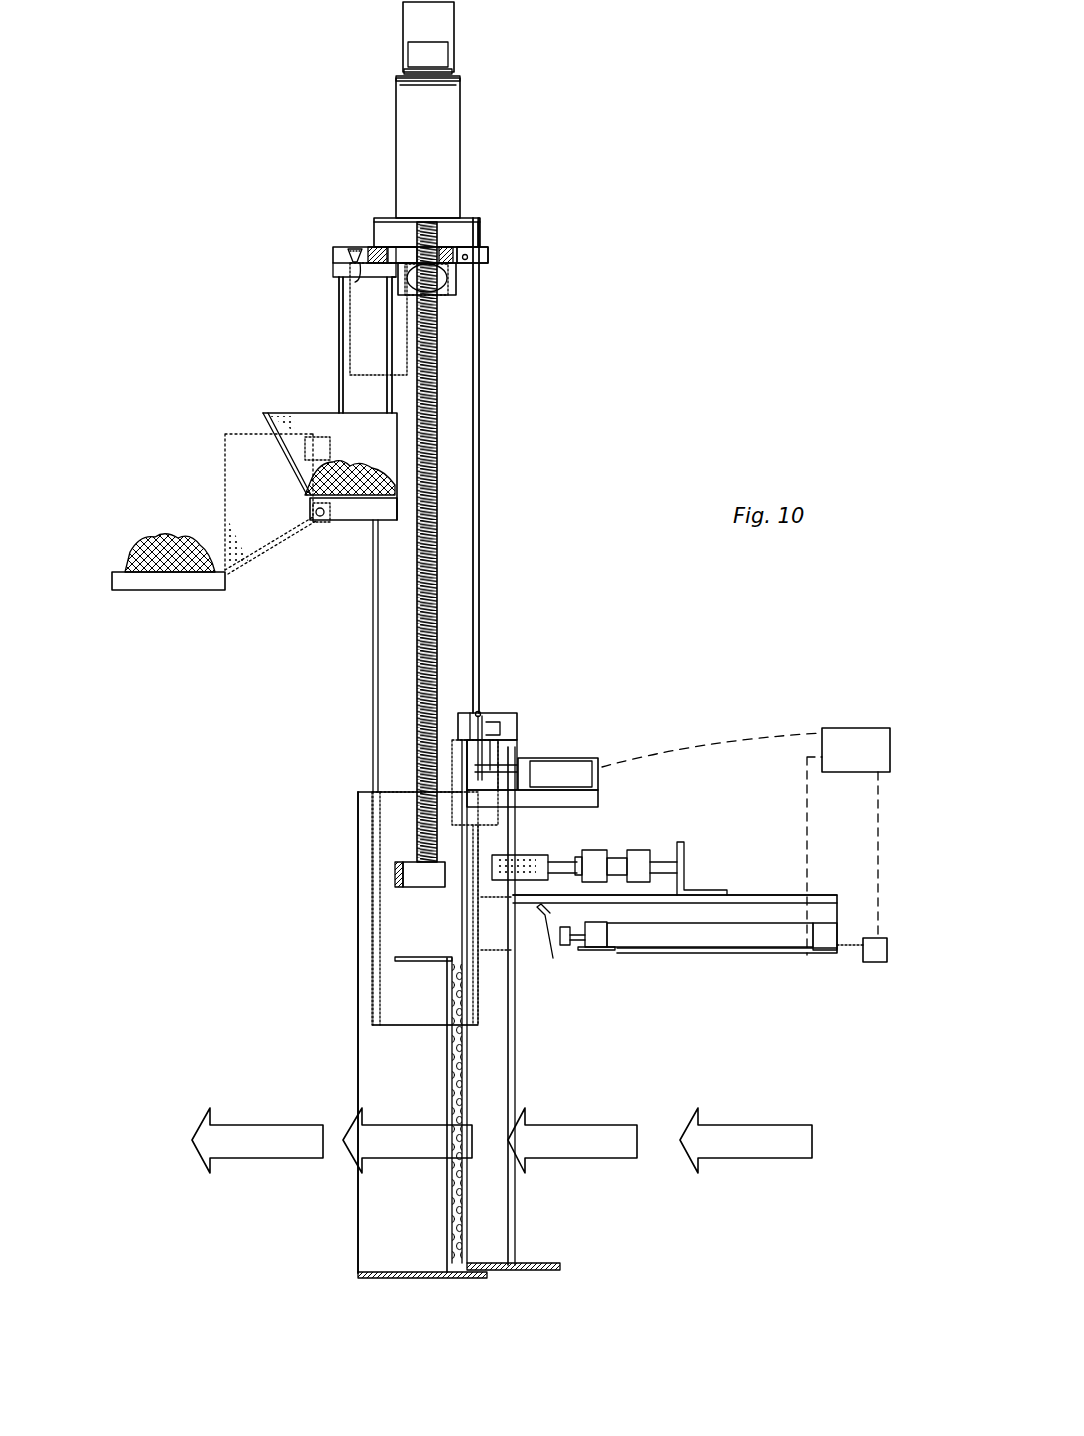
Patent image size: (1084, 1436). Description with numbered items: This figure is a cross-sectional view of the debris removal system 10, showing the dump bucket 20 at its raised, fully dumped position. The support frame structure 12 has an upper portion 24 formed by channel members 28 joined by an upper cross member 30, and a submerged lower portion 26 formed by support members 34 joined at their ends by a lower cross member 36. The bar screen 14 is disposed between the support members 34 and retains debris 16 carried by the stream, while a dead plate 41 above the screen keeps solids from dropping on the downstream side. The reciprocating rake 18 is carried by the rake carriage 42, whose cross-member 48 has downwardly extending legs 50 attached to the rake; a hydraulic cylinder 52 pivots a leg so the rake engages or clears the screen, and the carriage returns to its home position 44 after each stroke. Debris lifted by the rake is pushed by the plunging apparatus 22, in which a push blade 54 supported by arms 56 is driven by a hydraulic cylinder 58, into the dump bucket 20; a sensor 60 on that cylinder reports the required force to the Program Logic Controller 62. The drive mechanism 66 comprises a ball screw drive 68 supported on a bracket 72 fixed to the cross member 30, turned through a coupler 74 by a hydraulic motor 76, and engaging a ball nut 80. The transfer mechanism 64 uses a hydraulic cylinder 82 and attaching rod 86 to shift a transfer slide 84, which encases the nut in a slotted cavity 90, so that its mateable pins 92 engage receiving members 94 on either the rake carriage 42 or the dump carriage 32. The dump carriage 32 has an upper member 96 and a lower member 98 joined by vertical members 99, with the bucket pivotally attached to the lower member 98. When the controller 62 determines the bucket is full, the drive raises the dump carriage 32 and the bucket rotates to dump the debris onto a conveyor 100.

The debris removal system 10 is at (622, 630).
The support frame structure 12 is at (500, 318).
The bar screen 14 is at (447, 1232).
The debris 16 is at (348, 468).
The reciprocating rake 18 is at (505, 1270).
The dump bucket 20 is at (272, 413).
The plunging apparatus 22 is at (690, 962).
The upper portion 24 is at (483, 466).
The lower portion 26 is at (515, 1047).
The channel members 28 is at (479, 392).
The upper cross member 30 is at (463, 215).
The dump carriage 32 is at (354, 247).
The support members 34 is at (358, 1062).
The lower cross member 36 is at (386, 1278).
The dead plate 41 is at (400, 957).
The rake carriage 42 is at (500, 712).
The home position 44 is at (538, 703).
The cross-member 48 is at (518, 748).
The legs 50 is at (517, 975).
The hydraulic cylinder 52 is at (625, 850).
The push blade 54 is at (545, 900).
The arms 56 is at (742, 895).
The hydraulic cylinder 58 is at (740, 935).
The sensor 60 is at (870, 965).
The Program Logic Controller 62 is at (832, 740).
The transfer mechanism 64 is at (470, 232).
The drive mechanism 66 is at (478, 96).
The ball screw drive 68 is at (440, 562).
The bracket 72 is at (410, 80).
The coupler 74 is at (412, 54).
The hydraulic motor 76 is at (455, 22).
The ball nut 80 is at (440, 280).
The hydraulic cylinder 82 is at (565, 770).
The transfer slide 84 is at (478, 243).
The attaching rod 86 is at (478, 712).
The slotted cavity 90 is at (400, 255).
The mateable pins 92 is at (488, 257).
The receiving members 94 is at (343, 250).
The upper member 96 is at (333, 268).
The lower member 98 is at (325, 525).
The vertical members 99 is at (339, 352).
The conveyor 100 is at (130, 590).